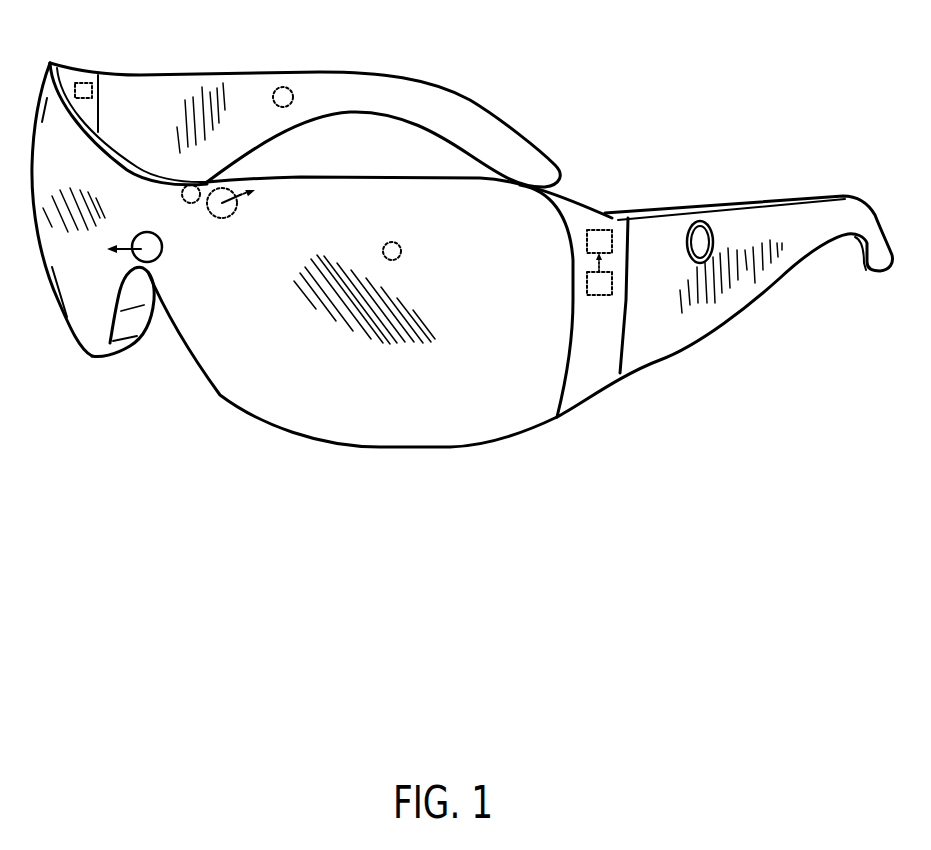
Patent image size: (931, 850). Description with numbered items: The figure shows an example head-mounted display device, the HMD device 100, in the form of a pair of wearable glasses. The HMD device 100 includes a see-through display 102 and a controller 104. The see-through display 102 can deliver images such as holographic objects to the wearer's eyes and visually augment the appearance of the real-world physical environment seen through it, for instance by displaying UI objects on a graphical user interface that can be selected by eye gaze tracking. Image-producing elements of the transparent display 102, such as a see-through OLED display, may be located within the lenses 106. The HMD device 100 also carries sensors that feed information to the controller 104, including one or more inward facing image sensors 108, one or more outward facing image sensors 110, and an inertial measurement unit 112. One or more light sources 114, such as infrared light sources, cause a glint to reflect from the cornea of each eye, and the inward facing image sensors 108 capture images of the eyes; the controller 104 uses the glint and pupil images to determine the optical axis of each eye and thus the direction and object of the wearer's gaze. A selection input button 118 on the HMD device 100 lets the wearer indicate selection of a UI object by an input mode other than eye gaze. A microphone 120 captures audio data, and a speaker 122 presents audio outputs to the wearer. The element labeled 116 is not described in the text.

The HMD device 100 is at (502, 58).
The see-through display 102 is at (247, 383).
The controller 104 is at (600, 229).
The lenses 106 is at (123, 325).
The inward facing image sensors 108 is at (229, 217).
The outward facing image sensors 110 is at (163, 247).
The inertial measurement unit 112 is at (613, 281).
The light sources 114 is at (191, 184).
The sensor 116 is at (394, 241).
The selection input button 118 is at (713, 230).
The microphone 120 is at (86, 80).
The speaker 122 is at (284, 86).